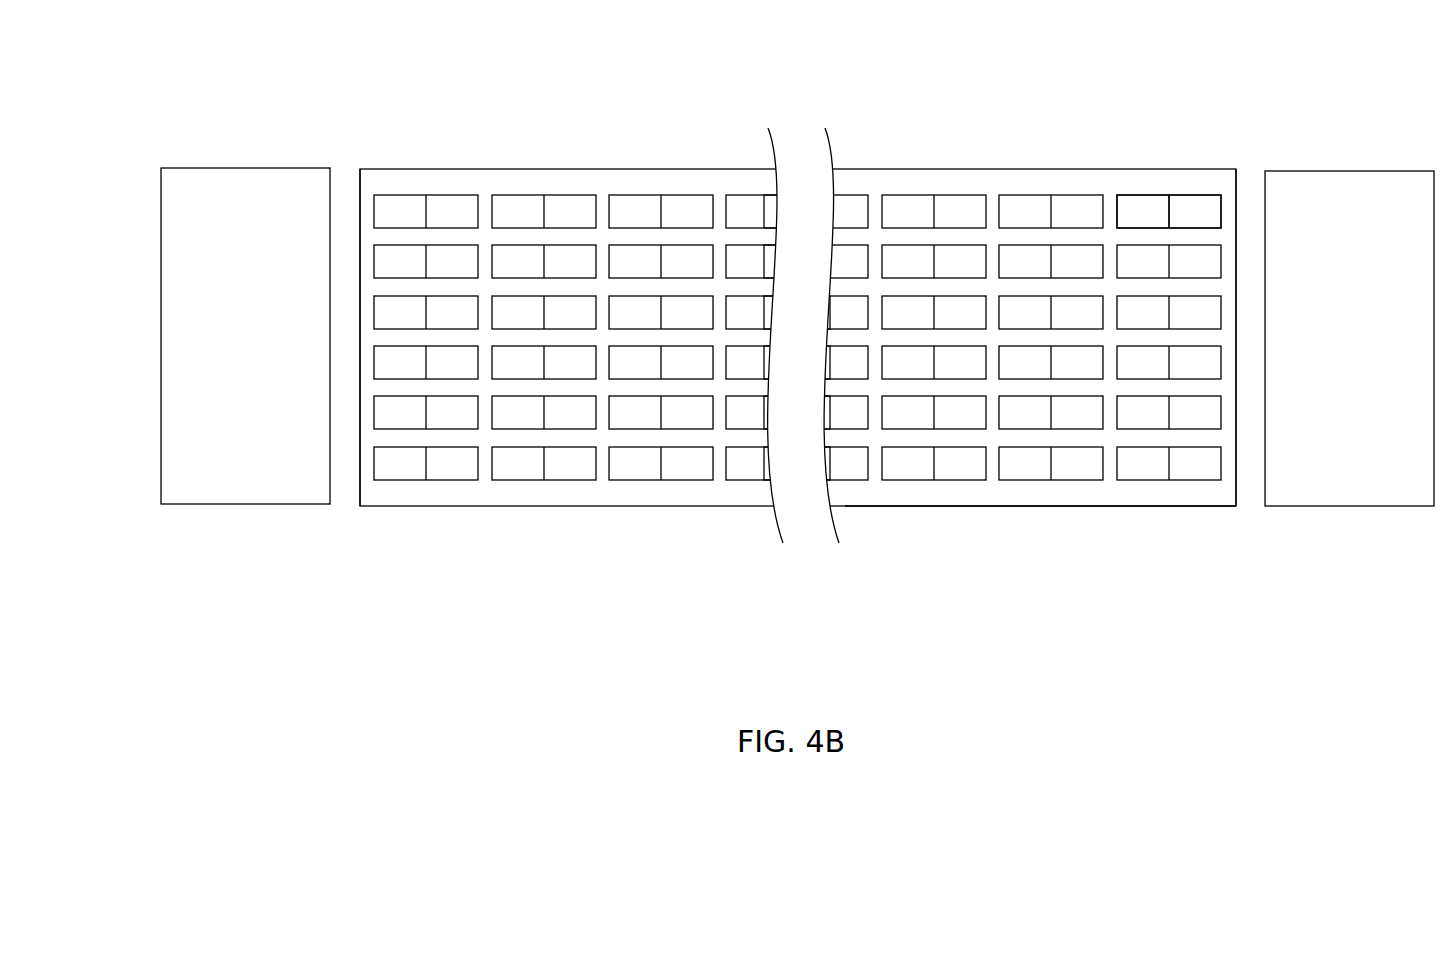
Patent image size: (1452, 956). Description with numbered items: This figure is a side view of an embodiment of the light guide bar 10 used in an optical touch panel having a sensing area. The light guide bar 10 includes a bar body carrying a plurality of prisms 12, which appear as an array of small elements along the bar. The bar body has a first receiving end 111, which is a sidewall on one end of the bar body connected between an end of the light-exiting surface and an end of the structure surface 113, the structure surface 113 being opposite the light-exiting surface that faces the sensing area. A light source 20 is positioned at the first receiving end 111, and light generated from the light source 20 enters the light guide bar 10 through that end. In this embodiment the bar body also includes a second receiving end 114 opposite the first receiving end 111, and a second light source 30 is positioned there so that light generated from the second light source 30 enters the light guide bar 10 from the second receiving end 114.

The light guide bar 10 is at (1253, 515).
The prism 12 is at (1200, 196).
The first receiving end 111 is at (1237, 196).
The structure surface 113 is at (1102, 490).
The second receiving end 114 is at (360, 478).
The light source 20 is at (1282, 196).
The second light source 30 is at (313, 187).